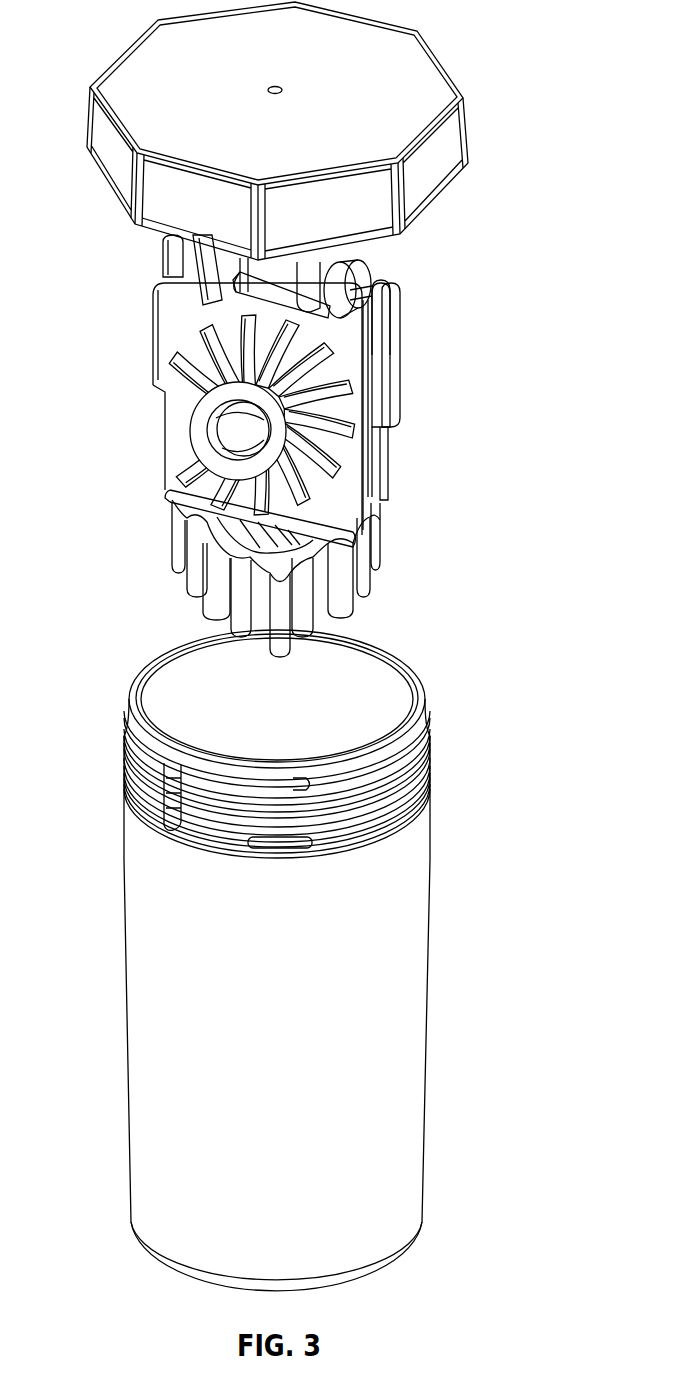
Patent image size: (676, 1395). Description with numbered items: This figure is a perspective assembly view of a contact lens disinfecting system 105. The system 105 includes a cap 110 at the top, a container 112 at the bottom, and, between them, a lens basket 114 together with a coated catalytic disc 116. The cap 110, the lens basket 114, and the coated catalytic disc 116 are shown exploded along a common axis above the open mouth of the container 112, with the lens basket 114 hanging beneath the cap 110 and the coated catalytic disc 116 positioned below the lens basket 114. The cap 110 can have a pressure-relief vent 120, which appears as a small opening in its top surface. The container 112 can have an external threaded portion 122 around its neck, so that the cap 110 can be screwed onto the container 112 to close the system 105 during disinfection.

The contact lens disinfecting system 105 is at (458, 330).
The cap 110 is at (128, 73).
The container 112 is at (408, 967).
The lens basket 114 is at (162, 317).
The coated catalytic disc 116 is at (380, 557).
The pressure-relief vent 120 is at (288, 82).
The external threaded portion 122 is at (433, 737).